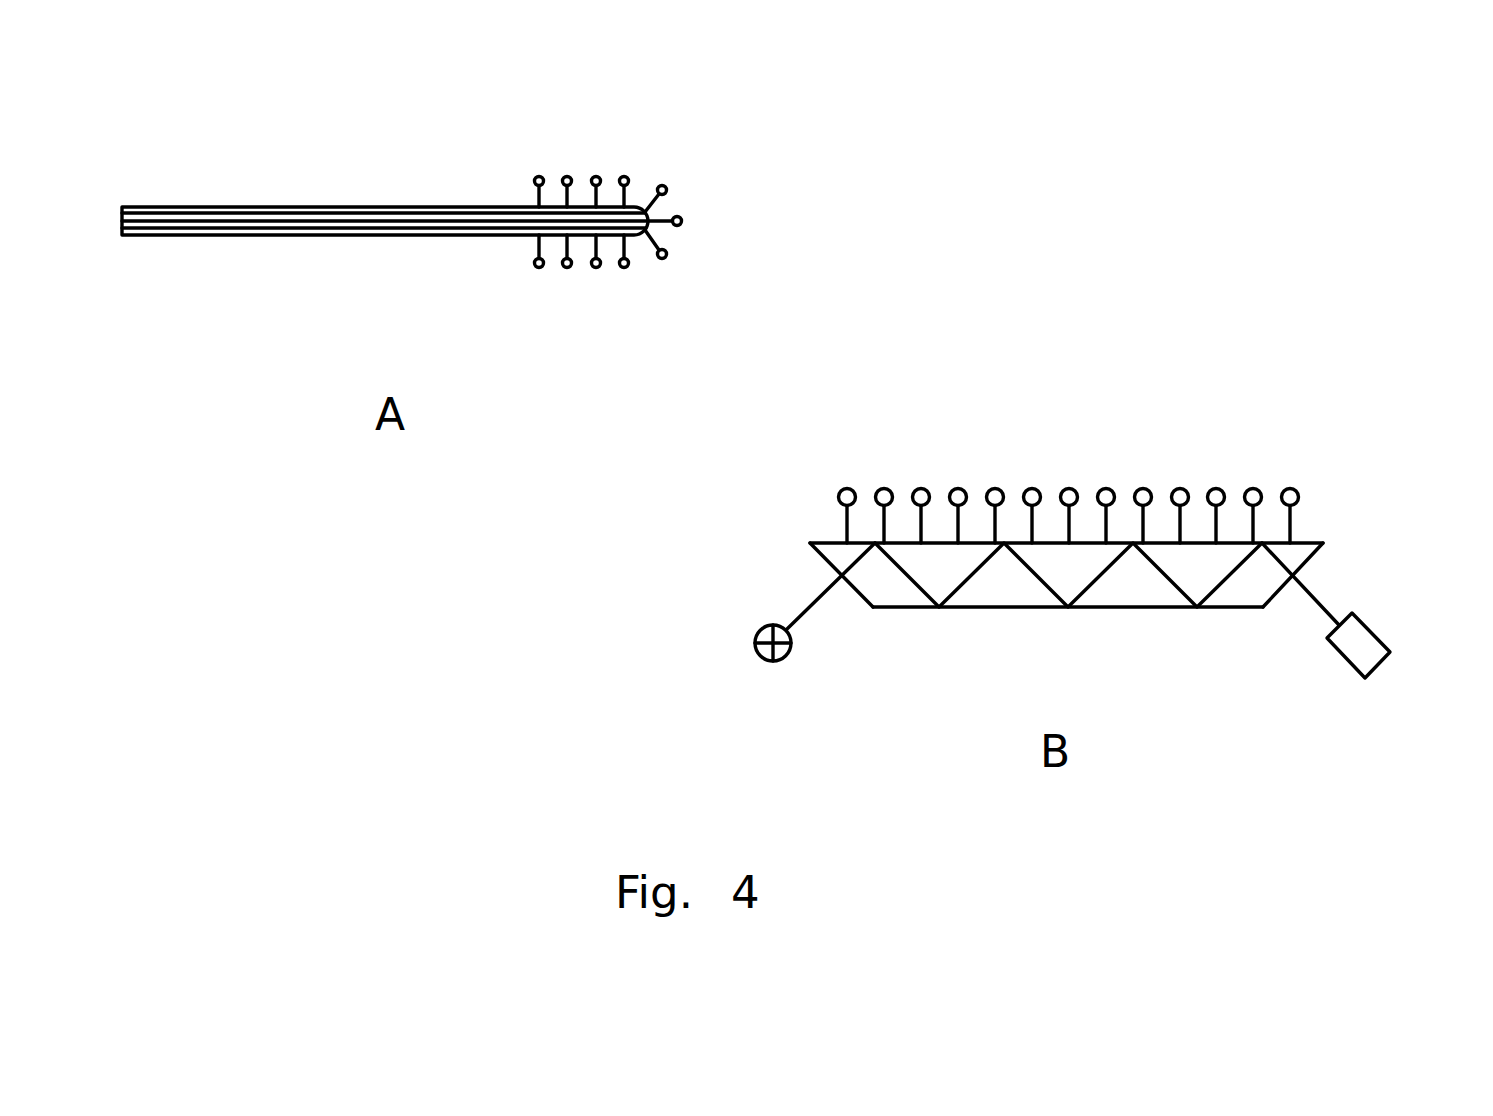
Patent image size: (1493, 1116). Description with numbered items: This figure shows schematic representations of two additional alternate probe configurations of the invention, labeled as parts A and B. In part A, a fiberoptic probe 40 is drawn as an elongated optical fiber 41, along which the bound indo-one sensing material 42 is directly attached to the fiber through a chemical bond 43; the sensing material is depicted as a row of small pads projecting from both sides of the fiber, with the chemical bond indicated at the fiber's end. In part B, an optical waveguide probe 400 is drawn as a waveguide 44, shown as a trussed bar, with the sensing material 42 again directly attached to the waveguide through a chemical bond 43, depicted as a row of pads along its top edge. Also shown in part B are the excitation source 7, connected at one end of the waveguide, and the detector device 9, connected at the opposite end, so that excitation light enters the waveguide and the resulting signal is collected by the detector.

The fiberoptic probe 40 is at (757, 275).
The optical fiber 41 is at (367, 216).
The Indo-1 sensing material 42 is at (568, 180).
The chemical bond 43 is at (651, 203).
The equivalent circuit 400 is at (1124, 653).
The waveguide 44 is at (1312, 560).
The excitation source 7 is at (788, 658).
The detector device 9 is at (1385, 660).